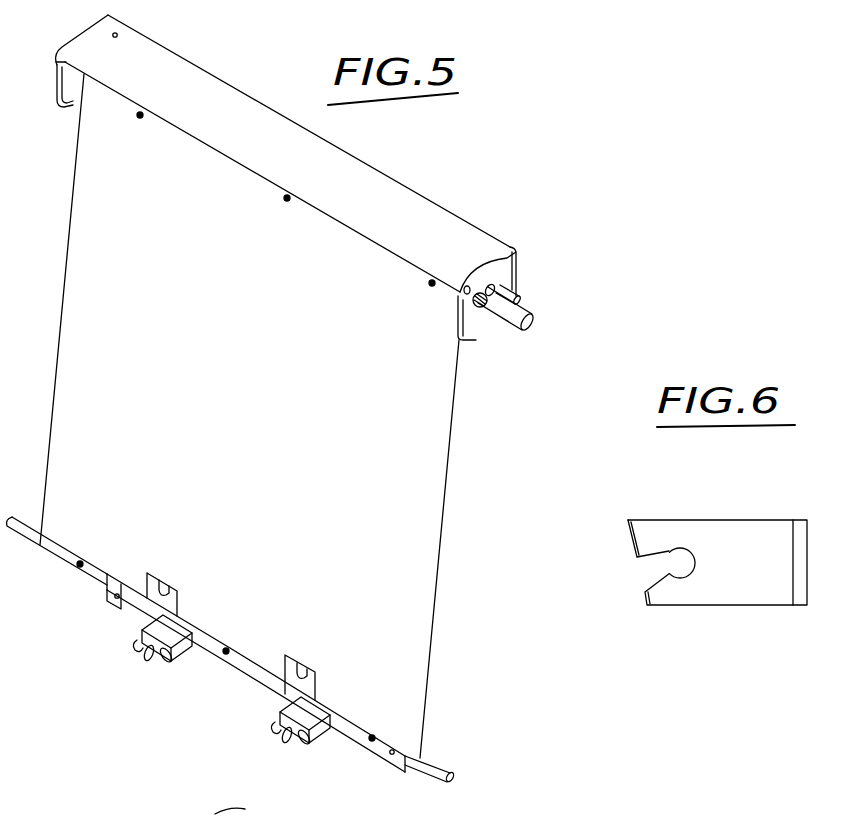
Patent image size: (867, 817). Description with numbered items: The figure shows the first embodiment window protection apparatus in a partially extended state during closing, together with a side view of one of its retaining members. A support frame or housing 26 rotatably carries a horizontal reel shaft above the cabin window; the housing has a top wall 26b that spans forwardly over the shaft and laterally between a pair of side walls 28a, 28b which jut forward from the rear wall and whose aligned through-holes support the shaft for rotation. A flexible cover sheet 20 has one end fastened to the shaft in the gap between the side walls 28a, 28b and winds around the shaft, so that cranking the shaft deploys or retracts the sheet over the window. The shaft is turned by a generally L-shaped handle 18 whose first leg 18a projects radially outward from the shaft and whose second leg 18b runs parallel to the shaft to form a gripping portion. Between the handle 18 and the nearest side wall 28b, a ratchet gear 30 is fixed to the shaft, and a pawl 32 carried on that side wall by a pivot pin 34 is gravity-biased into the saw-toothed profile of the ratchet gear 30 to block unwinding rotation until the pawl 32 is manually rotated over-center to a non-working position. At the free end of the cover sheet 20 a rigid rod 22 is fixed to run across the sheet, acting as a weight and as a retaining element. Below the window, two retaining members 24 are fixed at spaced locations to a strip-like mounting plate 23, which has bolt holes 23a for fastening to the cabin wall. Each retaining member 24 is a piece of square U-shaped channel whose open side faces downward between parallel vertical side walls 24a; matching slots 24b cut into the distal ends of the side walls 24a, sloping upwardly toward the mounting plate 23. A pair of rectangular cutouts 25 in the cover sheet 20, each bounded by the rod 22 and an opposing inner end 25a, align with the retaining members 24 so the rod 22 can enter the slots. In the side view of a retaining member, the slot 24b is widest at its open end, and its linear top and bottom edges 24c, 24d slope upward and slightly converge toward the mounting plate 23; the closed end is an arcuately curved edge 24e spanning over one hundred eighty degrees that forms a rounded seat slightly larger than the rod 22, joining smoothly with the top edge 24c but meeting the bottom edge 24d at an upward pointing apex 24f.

In FIG. 5, the L-shaped handle 18 is at (525, 330).
In FIG. 5, the first leg of the handle 18a is at (503, 318).
In FIG. 5, the second leg of the handle 18b is at (521, 302).
In FIG. 5, the cover sheet 20 is at (432, 490).
In FIG. 5, the rod 22 is at (438, 765).
In FIG. 5, the mounting plate 23 is at (239, 672).
In FIG. 5, the bolt holes 23a is at (108, 592).
In FIG. 5, the retaining members 24 is at (138, 636).
In FIG. 5, the side walls of the channel 24a is at (147, 663).
In FIG. 5, the slots 24b is at (148, 665).
In FIG. 6, the linear top edge of the slot 24c is at (648, 557).
In FIG. 6, the linear bottom edge of the slot 24d is at (648, 585).
In FIG. 6, the arcuately curved edge 24e is at (684, 553).
In FIG. 6, the apex 24f is at (668, 547).
In FIG. 5, the rectangular cutouts 25 is at (308, 677).
In FIG. 5, the inner end of the cutout 25a is at (162, 586).
In FIG. 5, the housing 26 is at (416, 211).
In FIG. 5, the top wall 26b is at (387, 204).
In FIG. 5, the side wall 28a is at (73, 96).
In FIG. 5, the side wall 28b is at (508, 262).
In FIG. 5, the ratchet gear 30 is at (476, 318).
In FIG. 5, the pawl 32 is at (493, 288).
In FIG. 5, the pivot pin 34 is at (482, 292).